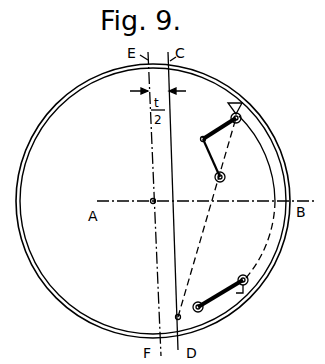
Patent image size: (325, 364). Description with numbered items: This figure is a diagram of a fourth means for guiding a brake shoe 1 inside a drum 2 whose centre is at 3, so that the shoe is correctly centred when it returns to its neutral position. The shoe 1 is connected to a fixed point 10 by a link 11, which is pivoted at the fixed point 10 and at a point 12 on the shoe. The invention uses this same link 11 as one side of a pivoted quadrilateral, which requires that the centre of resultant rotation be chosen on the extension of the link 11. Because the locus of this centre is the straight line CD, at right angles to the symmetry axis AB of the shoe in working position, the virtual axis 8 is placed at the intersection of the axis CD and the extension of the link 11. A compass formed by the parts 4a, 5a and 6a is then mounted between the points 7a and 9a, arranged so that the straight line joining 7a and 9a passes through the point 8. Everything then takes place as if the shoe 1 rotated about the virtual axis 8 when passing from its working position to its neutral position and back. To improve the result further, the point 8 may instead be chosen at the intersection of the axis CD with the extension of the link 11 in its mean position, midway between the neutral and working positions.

The brake shoe 1 is at (286, 190).
The drum 2 is at (57, 292).
The centre of the drum 3 is at (151, 199).
The compass side 4a is at (210, 160).
The compass side 5a is at (216, 129).
The compass joint 6a is at (200, 139).
The mounting point of compass 7a is at (243, 103).
The virtual axis 8 is at (175, 318).
The mounting point of compass 9a is at (215, 179).
The fixed point 10 is at (199, 302).
The link 11 is at (222, 290).
The pivot of link on shoe 12 is at (243, 275).